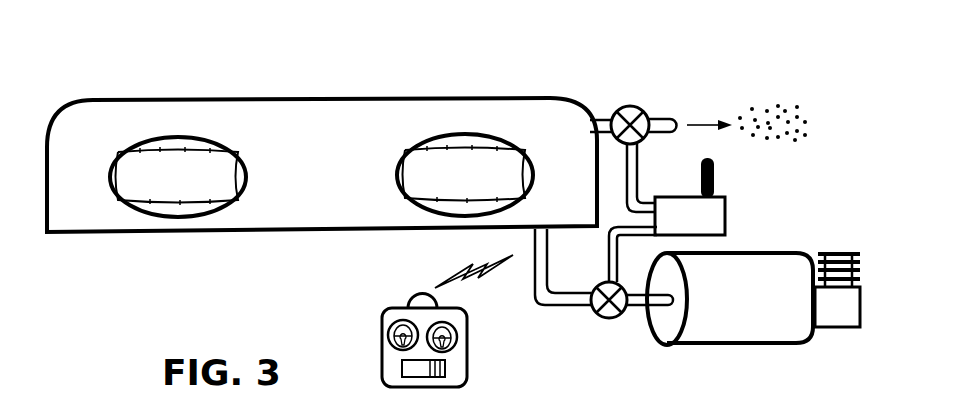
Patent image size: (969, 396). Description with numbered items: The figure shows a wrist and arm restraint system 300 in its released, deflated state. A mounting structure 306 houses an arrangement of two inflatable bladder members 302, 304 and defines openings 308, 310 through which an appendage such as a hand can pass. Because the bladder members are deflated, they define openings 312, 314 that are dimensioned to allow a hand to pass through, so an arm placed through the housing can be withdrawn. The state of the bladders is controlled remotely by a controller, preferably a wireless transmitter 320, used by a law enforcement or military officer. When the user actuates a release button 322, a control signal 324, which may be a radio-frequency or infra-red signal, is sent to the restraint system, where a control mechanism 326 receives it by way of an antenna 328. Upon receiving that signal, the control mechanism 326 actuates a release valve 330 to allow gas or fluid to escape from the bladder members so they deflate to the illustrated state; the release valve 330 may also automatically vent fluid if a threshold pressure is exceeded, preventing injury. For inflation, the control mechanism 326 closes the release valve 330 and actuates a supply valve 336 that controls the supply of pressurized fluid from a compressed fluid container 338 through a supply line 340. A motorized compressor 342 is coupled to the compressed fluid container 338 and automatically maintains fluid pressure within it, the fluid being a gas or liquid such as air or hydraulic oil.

The restraint system 300 is at (569, 70).
The inflatable bladder member 302 is at (167, 198).
The inflatable bladder member 304 is at (455, 195).
The mounting structure 306 is at (165, 98).
The opening 308 is at (170, 137).
The opening 310 is at (440, 133).
The opening 312 is at (158, 180).
The opening 314 is at (441, 177).
The wireless transmitter 320 is at (469, 364).
The release button 322 is at (382, 334).
The control signal 324 is at (495, 262).
The control mechanism 326 is at (727, 222).
The antenna 328 is at (720, 173).
The release valve 330 is at (636, 107).
The supply valve 336 is at (593, 313).
The compressed fluid container 338 is at (742, 346).
The supply line 340 is at (643, 308).
The motorized compressor 342 is at (830, 253).